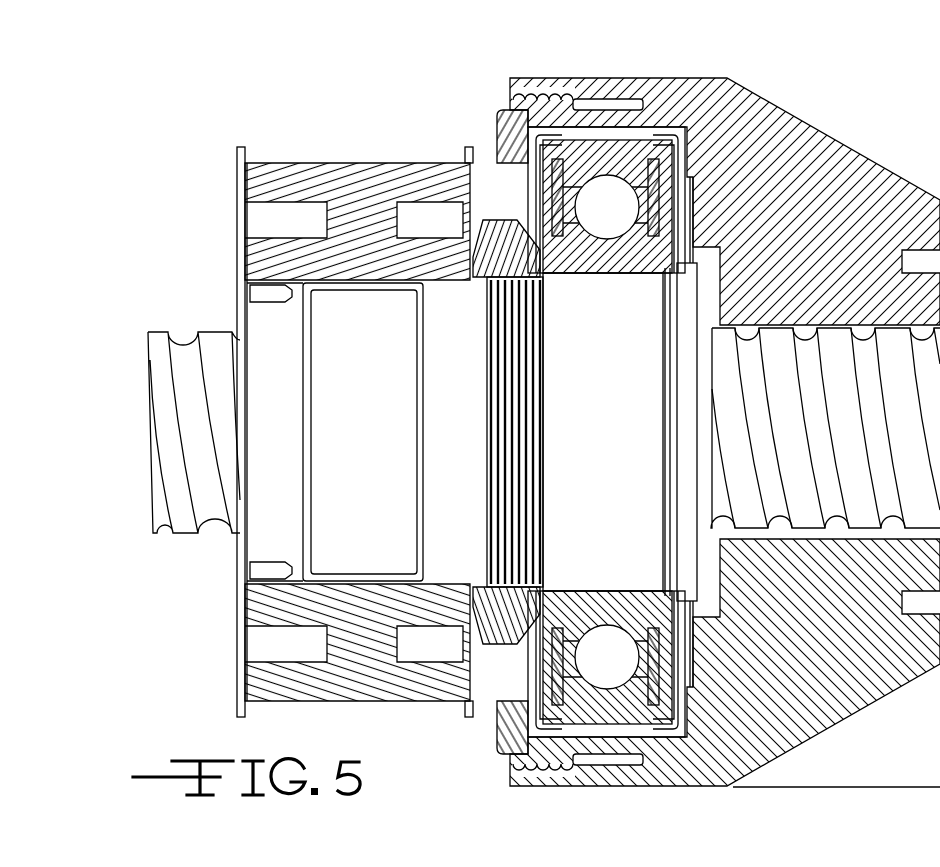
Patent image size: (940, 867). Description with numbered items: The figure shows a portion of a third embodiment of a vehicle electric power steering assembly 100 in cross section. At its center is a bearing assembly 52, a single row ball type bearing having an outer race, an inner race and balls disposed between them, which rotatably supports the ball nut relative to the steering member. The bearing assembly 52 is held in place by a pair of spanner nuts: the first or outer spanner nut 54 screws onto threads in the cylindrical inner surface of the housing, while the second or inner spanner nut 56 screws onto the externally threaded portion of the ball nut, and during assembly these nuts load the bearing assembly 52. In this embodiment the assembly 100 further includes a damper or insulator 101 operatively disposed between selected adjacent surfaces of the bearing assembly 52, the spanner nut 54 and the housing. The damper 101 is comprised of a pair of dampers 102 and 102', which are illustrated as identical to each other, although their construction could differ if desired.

The vehicle electric power steering assembly 100 is at (833, 93).
The damper 101 is at (616, 122).
The damper 102 is at (532, 373).
The damper 102' is at (700, 373).
The bearing assembly 52 is at (577, 276).
The spanner nut 54 is at (503, 135).
The spanner nut 56 is at (490, 259).